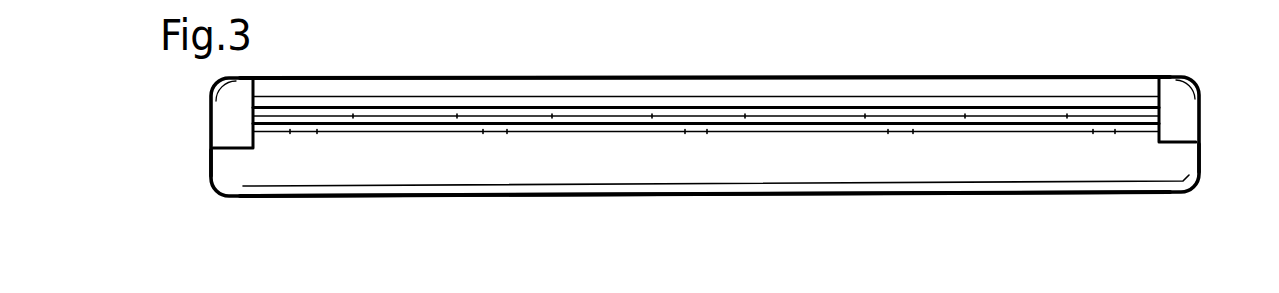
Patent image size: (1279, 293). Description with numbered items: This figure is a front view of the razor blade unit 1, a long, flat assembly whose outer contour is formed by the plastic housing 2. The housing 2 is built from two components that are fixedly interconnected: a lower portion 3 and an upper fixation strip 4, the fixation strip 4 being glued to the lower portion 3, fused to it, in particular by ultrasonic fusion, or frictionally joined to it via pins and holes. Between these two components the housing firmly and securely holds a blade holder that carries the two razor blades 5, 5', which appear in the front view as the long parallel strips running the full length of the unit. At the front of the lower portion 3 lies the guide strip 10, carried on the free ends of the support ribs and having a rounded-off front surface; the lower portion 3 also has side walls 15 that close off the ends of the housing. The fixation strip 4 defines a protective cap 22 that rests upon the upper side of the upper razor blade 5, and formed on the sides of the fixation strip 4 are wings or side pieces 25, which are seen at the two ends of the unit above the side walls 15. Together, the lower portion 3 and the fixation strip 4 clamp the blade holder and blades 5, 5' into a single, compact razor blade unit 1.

The razor blade unit 1 is at (190, 135).
The plastic housing 2 is at (1200, 128).
The lower portion 3 is at (1192, 189).
The fixation strip 4 is at (1163, 76).
The razor blade 5 is at (706, 80).
The razor blade 5' is at (706, 67).
The guide strip 10 is at (440, 177).
The side walls 15 is at (223, 172).
The protective cap 22 is at (813, 92).
The wings or side pieces 25 is at (225, 112).